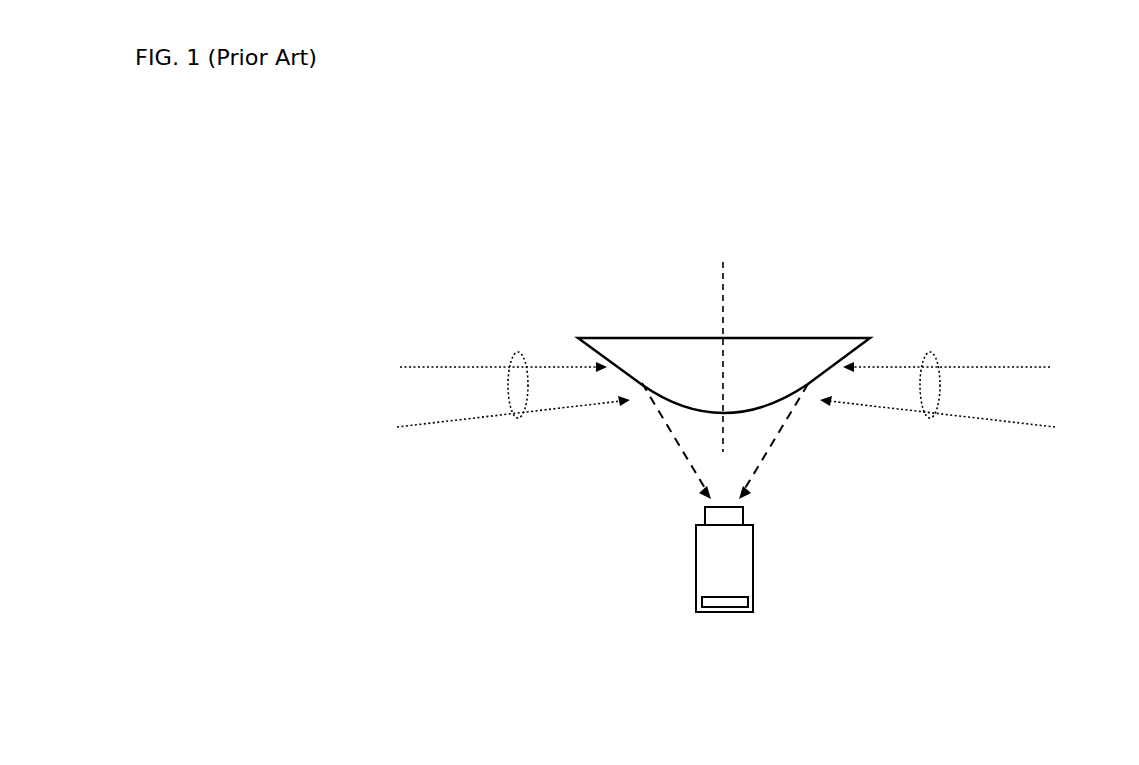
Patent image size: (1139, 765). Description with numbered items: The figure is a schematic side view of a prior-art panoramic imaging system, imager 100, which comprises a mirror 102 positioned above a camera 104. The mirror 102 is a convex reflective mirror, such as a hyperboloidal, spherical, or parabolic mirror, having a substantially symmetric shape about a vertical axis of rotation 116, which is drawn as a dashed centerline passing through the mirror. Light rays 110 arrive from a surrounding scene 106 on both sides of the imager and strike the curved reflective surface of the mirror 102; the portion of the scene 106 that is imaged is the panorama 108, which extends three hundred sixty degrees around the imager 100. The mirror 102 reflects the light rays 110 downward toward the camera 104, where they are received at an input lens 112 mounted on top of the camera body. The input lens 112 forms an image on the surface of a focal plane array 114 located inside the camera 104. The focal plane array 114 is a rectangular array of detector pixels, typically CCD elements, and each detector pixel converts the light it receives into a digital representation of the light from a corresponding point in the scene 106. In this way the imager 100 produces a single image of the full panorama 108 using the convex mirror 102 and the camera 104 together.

The imager 100 is at (486, 259).
The mirror 102 is at (763, 338).
The camera 104 is at (753, 563).
The scene 106 is at (369, 340).
The panorama 108 is at (402, 406).
The light rays 110 is at (518, 421).
The input lens 112 is at (705, 516).
The focal plane array 114 is at (723, 602).
The axis of rotation 116 is at (722, 281).